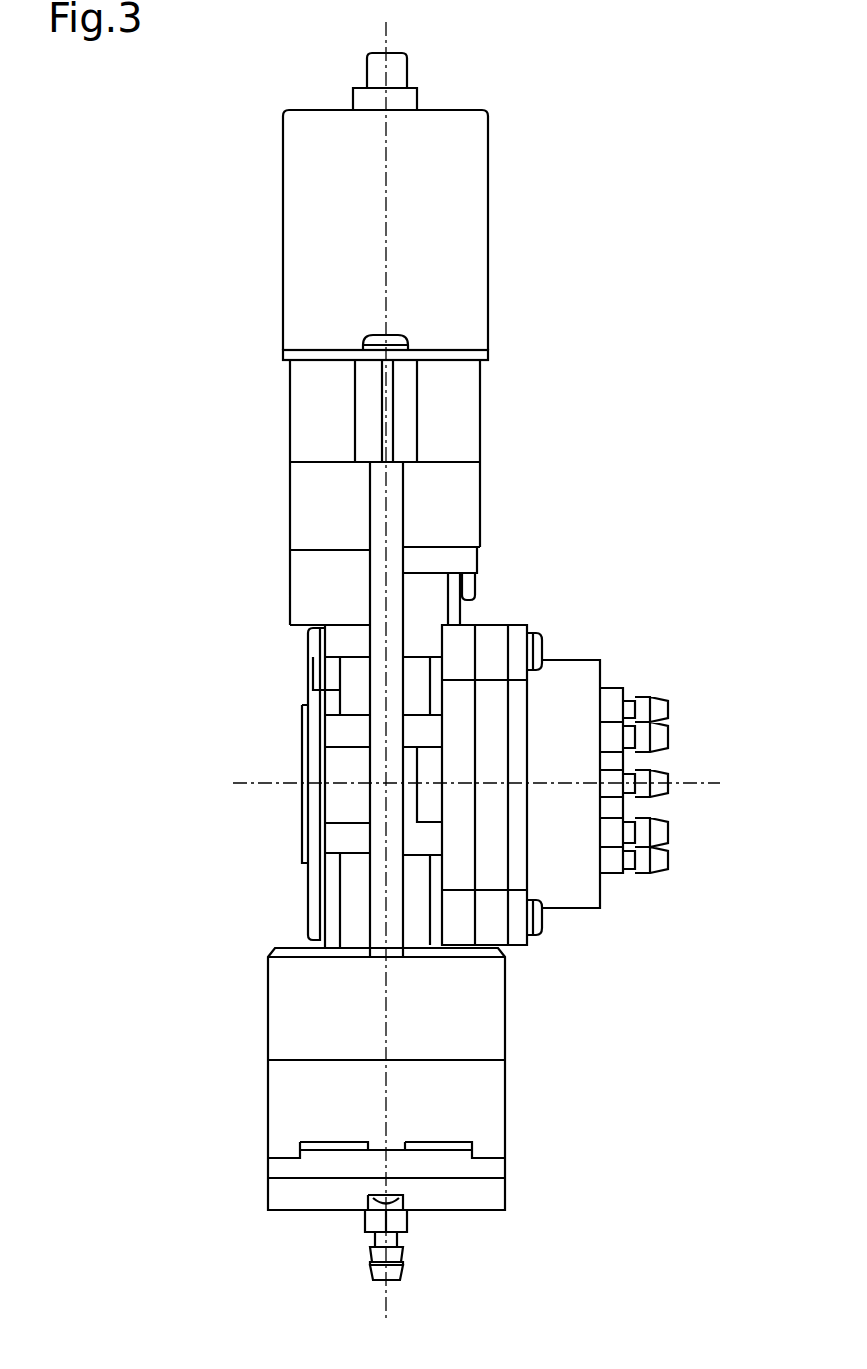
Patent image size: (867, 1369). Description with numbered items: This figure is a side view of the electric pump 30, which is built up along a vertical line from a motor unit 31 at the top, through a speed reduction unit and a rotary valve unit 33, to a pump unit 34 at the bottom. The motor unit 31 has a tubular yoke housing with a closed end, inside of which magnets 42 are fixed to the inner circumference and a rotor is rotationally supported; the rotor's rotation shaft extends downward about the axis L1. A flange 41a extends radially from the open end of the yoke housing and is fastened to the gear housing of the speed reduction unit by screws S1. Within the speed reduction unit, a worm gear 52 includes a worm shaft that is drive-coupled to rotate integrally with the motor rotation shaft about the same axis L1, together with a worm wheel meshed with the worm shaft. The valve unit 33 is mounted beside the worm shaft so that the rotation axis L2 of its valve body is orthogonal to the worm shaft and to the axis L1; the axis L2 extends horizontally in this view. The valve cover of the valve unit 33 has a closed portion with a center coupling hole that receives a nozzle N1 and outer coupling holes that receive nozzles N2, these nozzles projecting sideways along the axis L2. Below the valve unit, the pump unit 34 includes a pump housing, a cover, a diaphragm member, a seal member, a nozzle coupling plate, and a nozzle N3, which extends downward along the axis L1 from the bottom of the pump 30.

The electric pump 30 is at (131, 133).
The motor unit 31 is at (458, 110).
The magnets 42 is at (490, 147).
The flange 41a is at (473, 350).
The screws S1 is at (375, 335).
The worm gear 52 is at (482, 490).
The rotary valve unit 33 is at (580, 660).
The nozzle N1 is at (668, 788).
The nozzles N2 is at (668, 705).
The pump unit 34 is at (507, 1112).
The nozzle N3 is at (405, 1240).
The axis L1 is at (390, 1302).
The rotation axis L2 is at (264, 783).